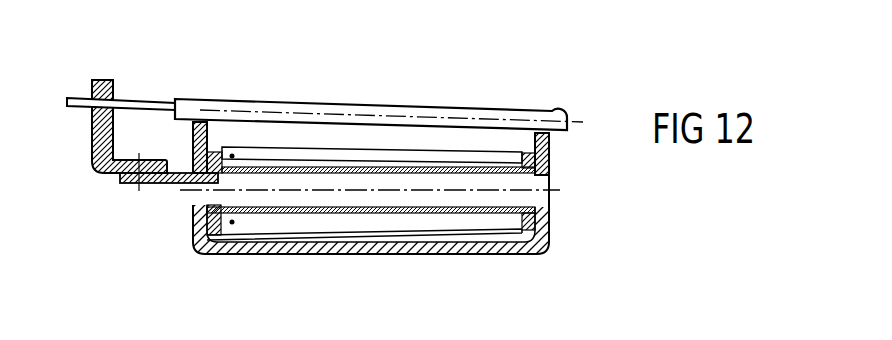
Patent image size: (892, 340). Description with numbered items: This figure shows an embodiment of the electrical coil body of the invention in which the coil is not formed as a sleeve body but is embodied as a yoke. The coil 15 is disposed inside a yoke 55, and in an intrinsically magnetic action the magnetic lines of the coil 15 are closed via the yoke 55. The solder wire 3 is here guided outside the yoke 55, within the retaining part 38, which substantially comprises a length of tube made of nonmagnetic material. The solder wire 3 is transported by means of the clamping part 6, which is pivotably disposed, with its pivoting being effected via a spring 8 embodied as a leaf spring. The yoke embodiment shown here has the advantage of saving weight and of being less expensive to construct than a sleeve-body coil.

The solder wire 3 is at (73, 97).
The retaining part 38 is at (237, 100).
The clamping part 6 is at (93, 143).
The spring 8 is at (165, 186).
The coil 15 is at (543, 168).
The yoke 55 is at (208, 248).